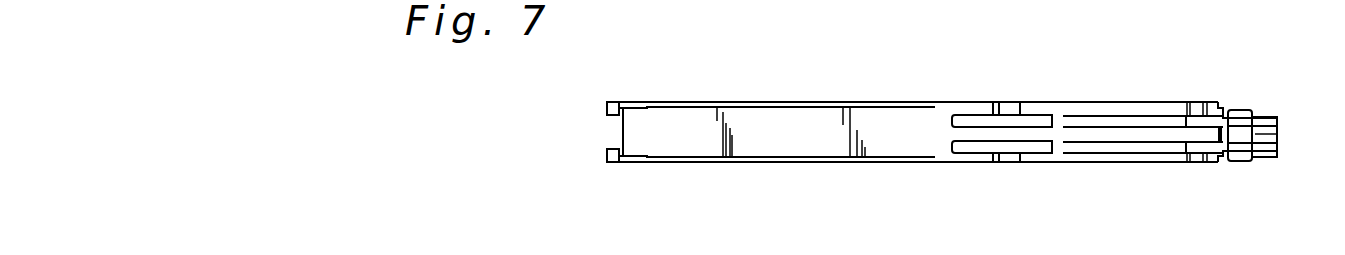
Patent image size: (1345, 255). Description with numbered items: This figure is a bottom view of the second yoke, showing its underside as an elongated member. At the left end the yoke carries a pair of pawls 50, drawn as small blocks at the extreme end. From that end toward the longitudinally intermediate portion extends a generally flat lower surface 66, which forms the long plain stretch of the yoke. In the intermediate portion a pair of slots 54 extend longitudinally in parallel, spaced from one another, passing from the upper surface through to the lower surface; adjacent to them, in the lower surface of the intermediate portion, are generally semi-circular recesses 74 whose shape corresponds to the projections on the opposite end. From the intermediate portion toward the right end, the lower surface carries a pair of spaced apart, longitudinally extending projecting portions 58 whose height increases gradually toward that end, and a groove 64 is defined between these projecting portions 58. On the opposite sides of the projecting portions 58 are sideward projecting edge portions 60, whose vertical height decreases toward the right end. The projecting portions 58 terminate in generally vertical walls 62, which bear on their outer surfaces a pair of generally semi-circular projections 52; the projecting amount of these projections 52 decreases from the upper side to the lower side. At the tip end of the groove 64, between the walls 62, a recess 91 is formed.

The pawls 50 is at (612, 102).
The flat lower surface 66 is at (810, 130).
The semi-circular recesses 74 is at (1009, 110).
The slots 54 is at (1042, 122).
The groove 64 is at (1125, 141).
The projecting portions 58 is at (1155, 122).
The sideward projecting edge portions 60 is at (1180, 108).
The vertical walls 62 is at (1268, 117).
The recess 91 is at (1277, 136).
The semi-circular projections 52 is at (1240, 163).